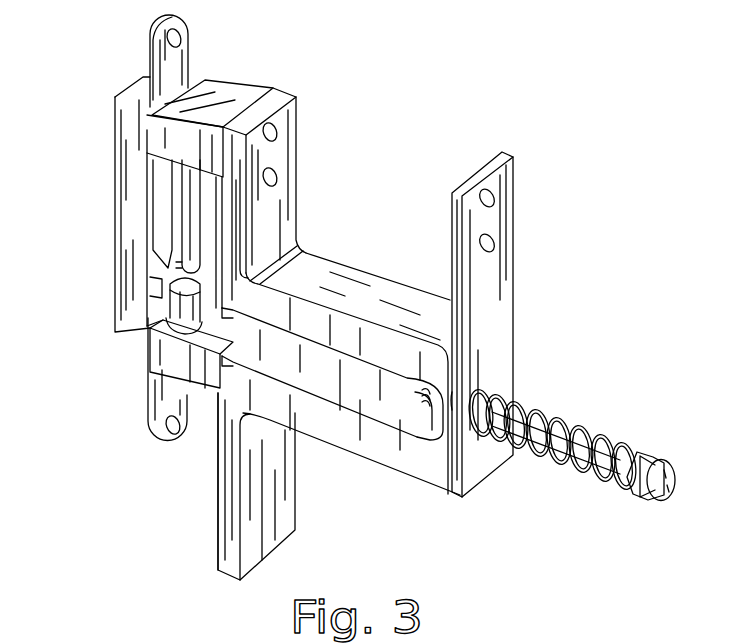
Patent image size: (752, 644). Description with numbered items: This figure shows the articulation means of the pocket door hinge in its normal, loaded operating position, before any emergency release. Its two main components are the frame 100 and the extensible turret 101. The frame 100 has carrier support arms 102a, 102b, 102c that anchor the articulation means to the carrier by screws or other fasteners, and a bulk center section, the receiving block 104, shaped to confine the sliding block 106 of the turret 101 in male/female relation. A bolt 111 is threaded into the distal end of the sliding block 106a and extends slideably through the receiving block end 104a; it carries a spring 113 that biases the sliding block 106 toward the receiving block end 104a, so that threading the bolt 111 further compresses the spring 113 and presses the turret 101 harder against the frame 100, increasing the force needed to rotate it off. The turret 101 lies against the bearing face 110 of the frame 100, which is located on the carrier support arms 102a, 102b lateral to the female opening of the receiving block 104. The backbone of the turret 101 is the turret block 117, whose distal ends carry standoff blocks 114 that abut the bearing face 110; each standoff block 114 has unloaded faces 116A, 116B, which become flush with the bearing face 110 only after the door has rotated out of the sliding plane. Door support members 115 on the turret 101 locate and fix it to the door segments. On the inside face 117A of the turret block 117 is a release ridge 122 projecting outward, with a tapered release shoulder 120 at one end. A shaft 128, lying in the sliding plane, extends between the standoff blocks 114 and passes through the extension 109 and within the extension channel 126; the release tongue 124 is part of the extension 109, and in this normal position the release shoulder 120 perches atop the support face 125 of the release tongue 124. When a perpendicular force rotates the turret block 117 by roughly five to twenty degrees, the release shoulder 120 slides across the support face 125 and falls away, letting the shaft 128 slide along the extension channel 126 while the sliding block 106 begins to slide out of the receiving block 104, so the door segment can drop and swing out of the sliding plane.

The frame 100 is at (317, 444).
The extensible turret 101 is at (95, 84).
The carrier support arm 102a is at (283, 510).
The carrier support arm 102b is at (287, 158).
The carrier support arm 102c is at (505, 223).
The receiving block 104 is at (372, 309).
The receiving block end 104a is at (450, 408).
The sliding block 106 is at (342, 383).
The distal end of sliding block 106a is at (400, 410).
The extension 109 is at (153, 322).
The bearing face 110 is at (218, 500).
The bolt 111 is at (547, 424).
The spring 113 is at (583, 476).
The standoff block 114 is at (210, 257).
The door support member 115 is at (181, 63).
The unloaded face 116A is at (208, 161).
The unloaded face 116B is at (237, 86).
The turret block 117 is at (117, 156).
The inside face 117A is at (157, 292).
The release shoulder 120 is at (158, 252).
The release ridge 122 is at (158, 176).
The release tongue 124 is at (182, 316).
The support face 125 is at (183, 270).
The extension channel 126 is at (178, 320).
The shaft 128 is at (192, 240).